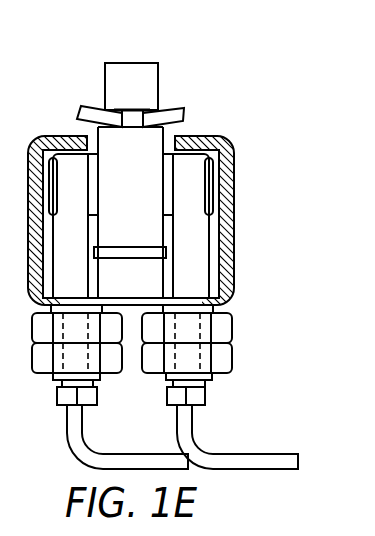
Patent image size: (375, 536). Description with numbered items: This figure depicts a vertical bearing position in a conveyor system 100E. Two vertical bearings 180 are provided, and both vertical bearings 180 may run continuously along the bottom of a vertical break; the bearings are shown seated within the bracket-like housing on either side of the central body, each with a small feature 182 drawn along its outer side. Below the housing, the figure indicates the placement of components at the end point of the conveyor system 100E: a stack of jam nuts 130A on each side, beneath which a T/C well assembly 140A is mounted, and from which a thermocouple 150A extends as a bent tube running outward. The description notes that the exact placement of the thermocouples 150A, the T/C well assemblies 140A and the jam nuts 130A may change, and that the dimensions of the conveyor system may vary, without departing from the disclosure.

The conveyor system 100E is at (205, 75).
The vertical bearing 180 is at (187, 238).
The retaining tab 182 is at (168, 179).
The jam nut 130A is at (233, 323).
The T/C well assembly 140A is at (206, 375).
The thermocouple 150A is at (193, 406).